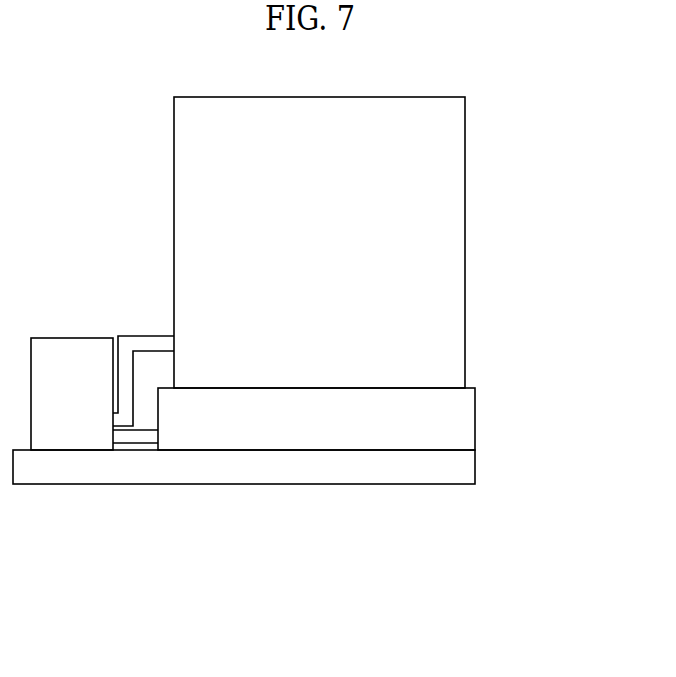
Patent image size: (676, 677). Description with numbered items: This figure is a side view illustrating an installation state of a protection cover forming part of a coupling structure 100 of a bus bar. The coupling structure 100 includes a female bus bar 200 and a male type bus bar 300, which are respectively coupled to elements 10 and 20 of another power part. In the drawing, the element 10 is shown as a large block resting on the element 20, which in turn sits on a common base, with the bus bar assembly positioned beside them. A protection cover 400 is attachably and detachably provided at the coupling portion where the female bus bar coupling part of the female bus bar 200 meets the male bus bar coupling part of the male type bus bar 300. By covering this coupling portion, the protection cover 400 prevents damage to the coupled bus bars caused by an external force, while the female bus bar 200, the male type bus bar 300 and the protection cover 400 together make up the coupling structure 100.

The element of another power part 10 is at (457, 246).
The element of another power part 20 is at (465, 421).
The coupling structure of the bus bar 100 is at (141, 482).
The female bus bar 200 is at (160, 343).
The male type bus bar 300 is at (145, 440).
The protection cover 400 is at (83, 443).